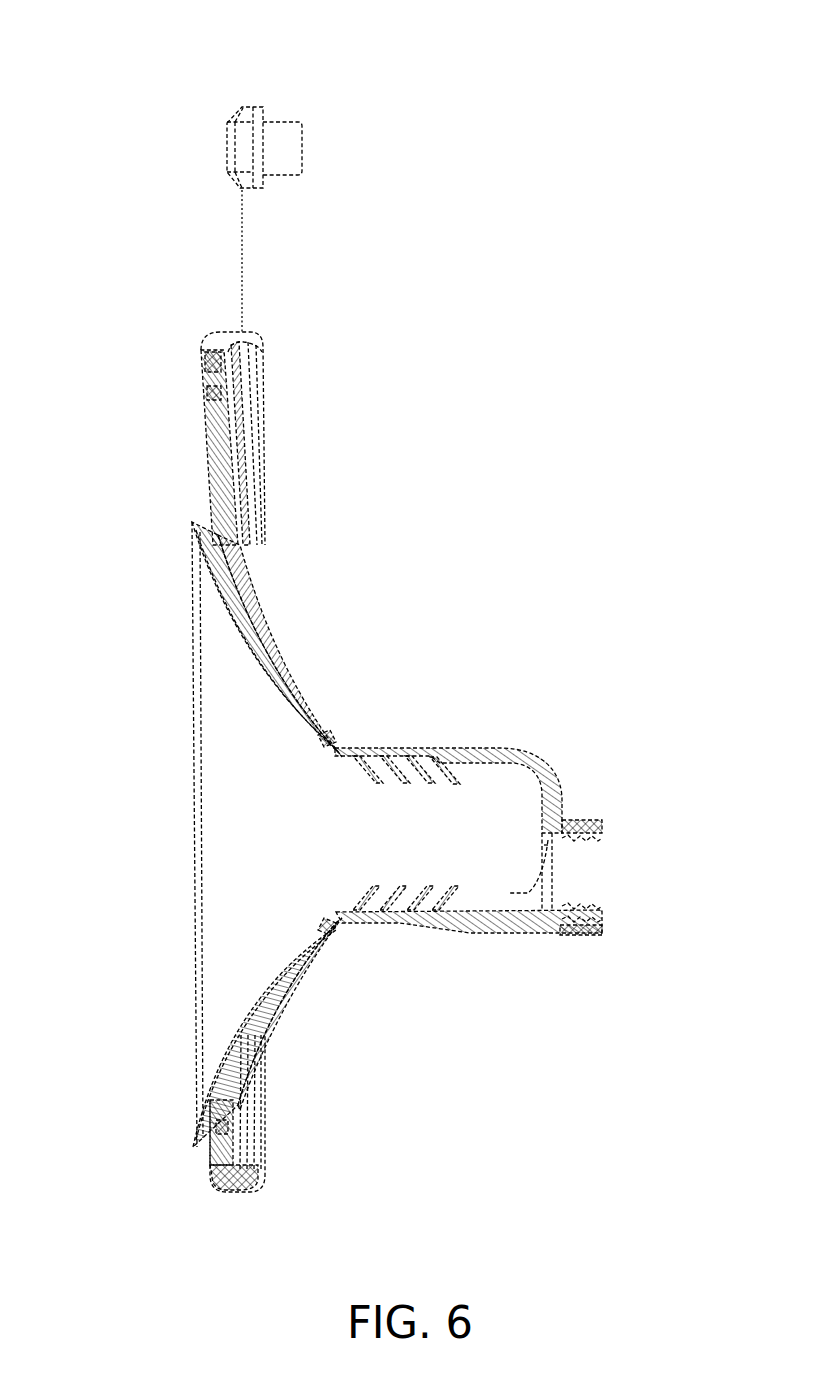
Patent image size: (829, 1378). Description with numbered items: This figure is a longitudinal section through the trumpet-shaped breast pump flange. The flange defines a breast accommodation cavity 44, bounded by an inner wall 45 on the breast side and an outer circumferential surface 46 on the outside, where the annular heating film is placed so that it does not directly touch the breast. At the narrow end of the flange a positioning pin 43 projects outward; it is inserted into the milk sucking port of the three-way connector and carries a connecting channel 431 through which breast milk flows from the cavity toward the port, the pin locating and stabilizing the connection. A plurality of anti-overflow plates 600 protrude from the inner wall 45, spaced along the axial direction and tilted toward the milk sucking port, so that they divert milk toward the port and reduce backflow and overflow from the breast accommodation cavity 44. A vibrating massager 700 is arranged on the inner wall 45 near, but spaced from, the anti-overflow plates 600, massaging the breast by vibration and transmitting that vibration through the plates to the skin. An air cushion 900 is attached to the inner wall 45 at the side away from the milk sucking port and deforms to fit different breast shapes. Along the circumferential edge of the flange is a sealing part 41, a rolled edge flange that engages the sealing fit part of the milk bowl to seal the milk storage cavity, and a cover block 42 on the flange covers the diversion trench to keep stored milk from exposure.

The sealing part 41 is at (255, 1175).
The cover block 42 is at (262, 143).
The positioning pin 43 is at (580, 920).
The connecting channel 431 is at (574, 879).
The breast accommodation cavity 44 is at (236, 797).
The inner wall 45 is at (497, 763).
The outer circumferential surface 46 is at (397, 920).
The anti-overflow plates 600 is at (437, 765).
The vibrating massager 700 is at (325, 740).
The air cushion 900 is at (228, 1053).